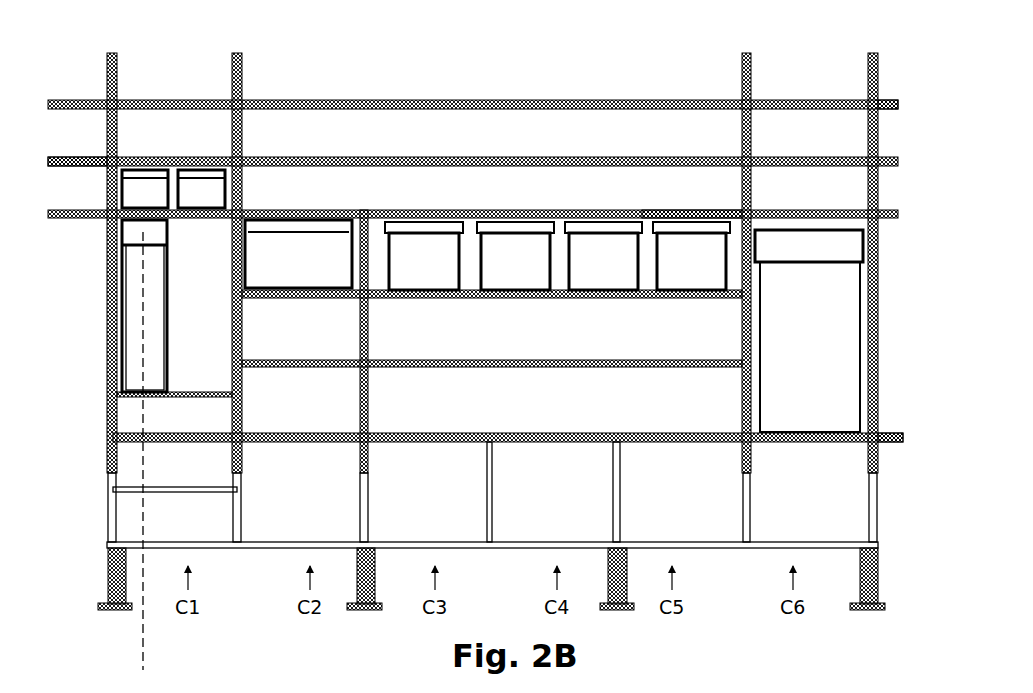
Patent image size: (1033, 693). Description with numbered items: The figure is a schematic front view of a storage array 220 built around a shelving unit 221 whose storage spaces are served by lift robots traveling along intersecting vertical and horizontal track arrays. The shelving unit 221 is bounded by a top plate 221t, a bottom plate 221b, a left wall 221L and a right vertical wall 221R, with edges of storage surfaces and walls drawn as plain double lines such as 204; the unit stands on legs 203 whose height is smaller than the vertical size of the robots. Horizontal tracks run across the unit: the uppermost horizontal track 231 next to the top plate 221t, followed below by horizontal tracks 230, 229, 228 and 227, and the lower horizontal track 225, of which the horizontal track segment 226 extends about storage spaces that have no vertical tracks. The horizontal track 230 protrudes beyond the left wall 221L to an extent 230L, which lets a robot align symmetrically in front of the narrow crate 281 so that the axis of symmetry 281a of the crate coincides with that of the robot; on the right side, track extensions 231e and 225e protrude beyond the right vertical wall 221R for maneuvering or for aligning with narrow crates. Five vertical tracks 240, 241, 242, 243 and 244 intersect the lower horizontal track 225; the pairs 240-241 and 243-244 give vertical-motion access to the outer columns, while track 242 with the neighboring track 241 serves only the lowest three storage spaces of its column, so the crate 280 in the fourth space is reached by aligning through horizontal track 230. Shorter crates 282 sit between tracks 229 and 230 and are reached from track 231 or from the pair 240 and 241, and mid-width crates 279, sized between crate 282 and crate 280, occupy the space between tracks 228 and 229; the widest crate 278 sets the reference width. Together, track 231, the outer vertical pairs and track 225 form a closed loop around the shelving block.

The storage array 220 is at (491, 309).
The shelving unit 221 is at (896, 532).
The top plate 221t is at (421, 100).
The bottom plate 221b is at (428, 540).
The left wall 221L is at (107, 503).
The right vertical wall 221R is at (869, 495).
The track extension 230L is at (75, 157).
The horizontal track 230 is at (421, 166).
The uppermost horizontal track 231 is at (683, 110).
The track extension 231e is at (897, 108).
The horizontal track 229 is at (643, 210).
The horizontal track 228 is at (305, 300).
The horizontal track 227 is at (540, 368).
The horizontal track segment 226 is at (553, 443).
The lower horizontal track 225 is at (191, 443).
The track extension 225e is at (893, 442).
The edge of storage surface 204 is at (192, 493).
The legs 203 is at (107, 570).
The vertical track 240 is at (104, 445).
The vertical track 241 is at (230, 305).
The vertical track 242 is at (358, 393).
The vertical track 243 is at (740, 382).
The vertical track 244 is at (880, 299).
The crate 278 is at (838, 331).
The crates 279 is at (422, 272).
The crate 280 is at (292, 250).
The crate 281 is at (130, 262).
The axis of symmetry 281a is at (143, 365).
The crate 282 is at (138, 170).